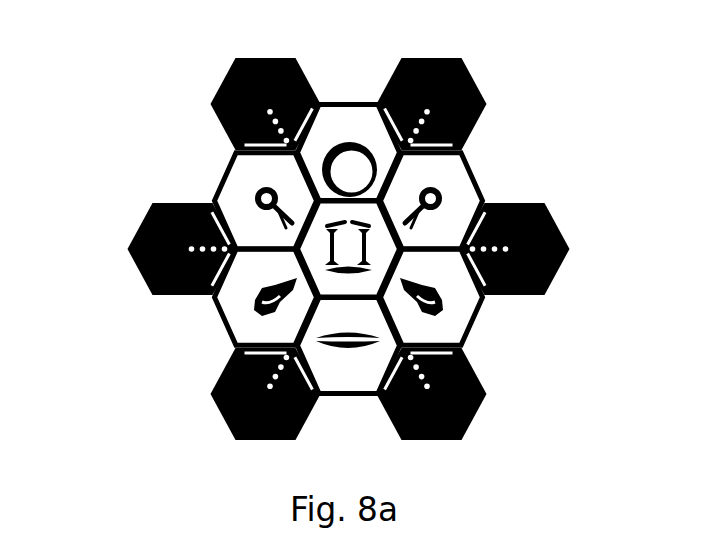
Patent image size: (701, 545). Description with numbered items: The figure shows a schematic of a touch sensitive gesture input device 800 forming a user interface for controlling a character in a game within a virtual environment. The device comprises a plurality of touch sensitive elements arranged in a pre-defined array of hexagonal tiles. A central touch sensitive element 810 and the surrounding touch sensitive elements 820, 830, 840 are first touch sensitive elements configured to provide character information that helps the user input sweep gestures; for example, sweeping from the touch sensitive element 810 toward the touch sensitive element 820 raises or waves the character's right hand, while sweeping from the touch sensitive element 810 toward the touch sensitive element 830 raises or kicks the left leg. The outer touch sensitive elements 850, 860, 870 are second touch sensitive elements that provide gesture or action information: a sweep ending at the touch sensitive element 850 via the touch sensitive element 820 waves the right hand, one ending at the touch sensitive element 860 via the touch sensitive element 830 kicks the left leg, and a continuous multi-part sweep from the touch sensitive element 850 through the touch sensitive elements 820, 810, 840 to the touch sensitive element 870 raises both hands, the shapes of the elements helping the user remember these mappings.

The touch sensitive gesture input device 800 is at (373, 38).
The touch sensitive element 810 is at (382, 282).
The touch sensitive element 820 is at (467, 168).
The touch sensitive element 830 is at (220, 322).
The touch sensitive element 840 is at (230, 162).
The touch sensitive element 850 is at (467, 74).
The touch sensitive element 860 is at (130, 229).
The touch sensitive element 870 is at (232, 66).